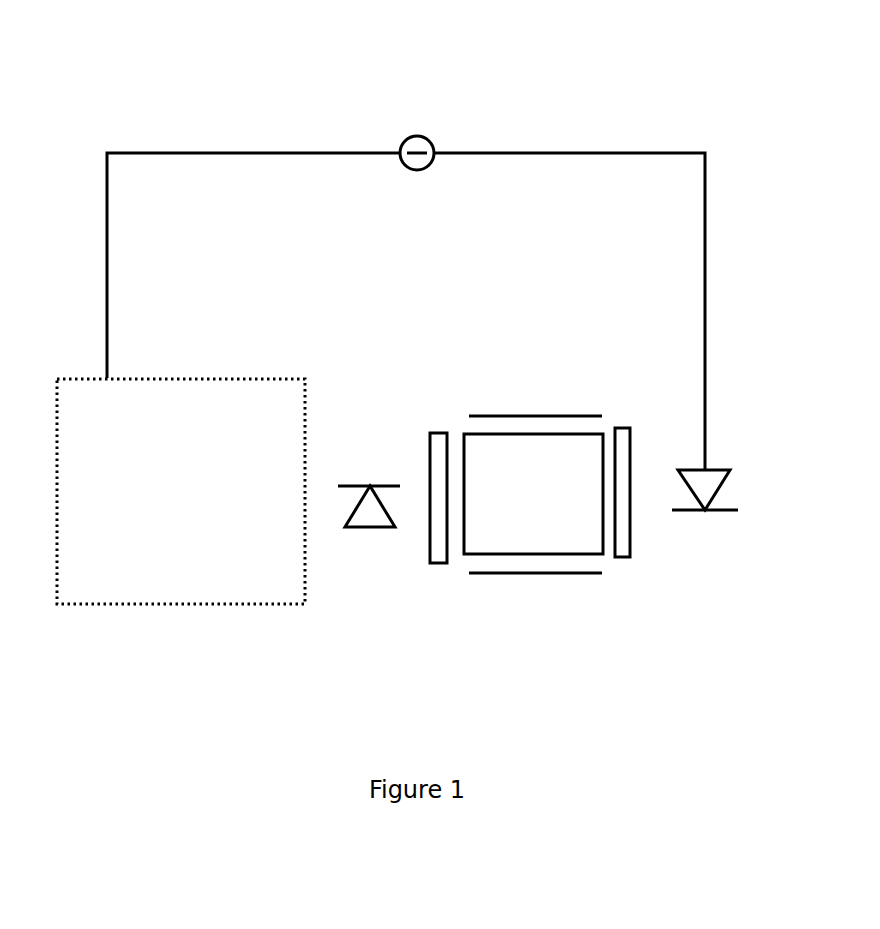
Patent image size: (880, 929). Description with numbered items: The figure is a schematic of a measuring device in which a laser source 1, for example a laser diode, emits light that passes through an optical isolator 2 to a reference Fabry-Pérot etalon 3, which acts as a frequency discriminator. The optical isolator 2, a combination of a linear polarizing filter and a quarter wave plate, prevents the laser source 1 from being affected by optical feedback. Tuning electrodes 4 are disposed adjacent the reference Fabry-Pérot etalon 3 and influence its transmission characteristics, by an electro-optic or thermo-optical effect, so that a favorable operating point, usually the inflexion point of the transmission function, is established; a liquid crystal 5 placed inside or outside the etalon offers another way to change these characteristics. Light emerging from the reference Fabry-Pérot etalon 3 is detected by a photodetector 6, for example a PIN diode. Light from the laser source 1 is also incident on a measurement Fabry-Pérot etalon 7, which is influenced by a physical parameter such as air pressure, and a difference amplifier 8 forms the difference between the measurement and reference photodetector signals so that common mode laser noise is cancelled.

The laser source 1 is at (363, 537).
The optical isolator 2 is at (435, 570).
The reference Fabry-Pérot etalon 3 is at (533, 494).
The tuning electrodes 4 is at (550, 571).
The liquid crystal 5 is at (619, 566).
The photodetector 6 is at (708, 528).
The measurement Fabry-Pérot etalon 7 is at (181, 491).
The difference amplifier 8 is at (438, 143).